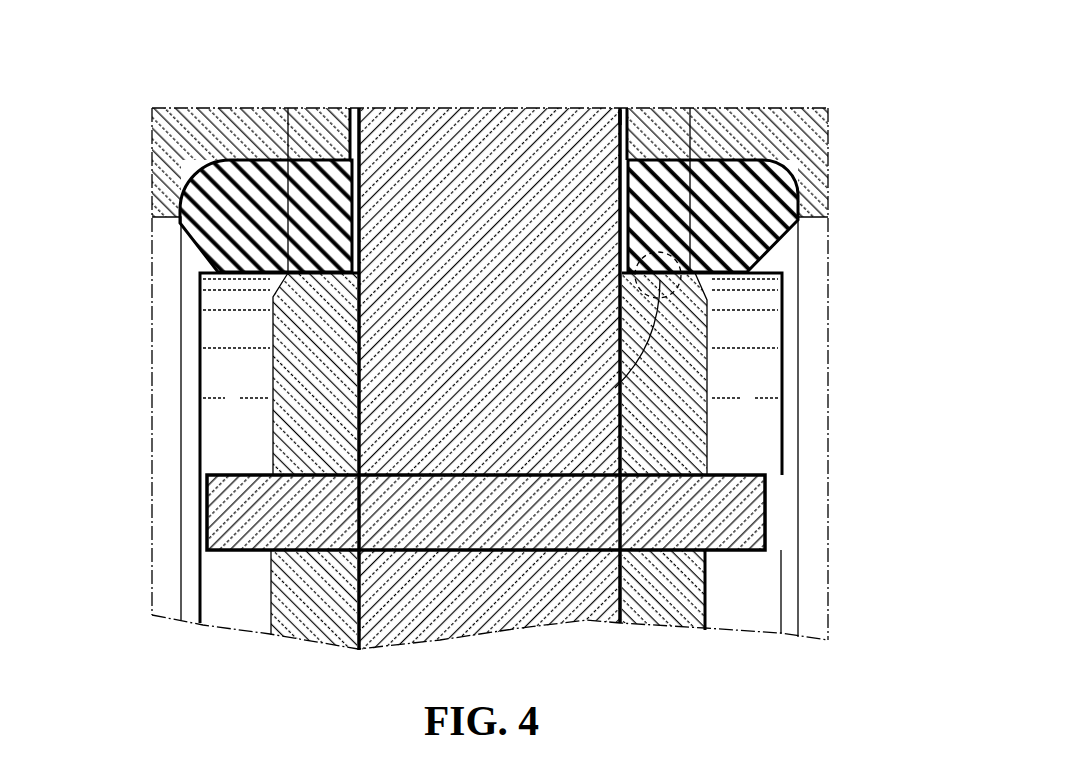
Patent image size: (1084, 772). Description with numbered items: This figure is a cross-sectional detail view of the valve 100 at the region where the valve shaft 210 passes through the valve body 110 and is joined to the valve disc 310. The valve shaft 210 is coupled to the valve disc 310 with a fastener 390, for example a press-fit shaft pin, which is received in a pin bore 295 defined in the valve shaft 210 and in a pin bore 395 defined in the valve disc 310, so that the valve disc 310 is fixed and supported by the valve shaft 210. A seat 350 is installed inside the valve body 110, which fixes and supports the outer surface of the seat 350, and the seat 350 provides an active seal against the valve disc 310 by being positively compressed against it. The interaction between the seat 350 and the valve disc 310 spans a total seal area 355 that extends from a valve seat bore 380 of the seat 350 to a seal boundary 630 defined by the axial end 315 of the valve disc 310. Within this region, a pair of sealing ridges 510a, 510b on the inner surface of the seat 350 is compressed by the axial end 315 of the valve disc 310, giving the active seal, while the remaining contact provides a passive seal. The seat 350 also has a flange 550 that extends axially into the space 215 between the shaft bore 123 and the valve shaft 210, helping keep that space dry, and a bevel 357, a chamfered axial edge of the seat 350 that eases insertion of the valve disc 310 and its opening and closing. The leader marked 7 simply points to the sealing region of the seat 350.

The valve 100 is at (220, 63).
The valve body 110 is at (765, 137).
The valve shaft 210 is at (538, 147).
The flange 550 is at (360, 147).
The space 215 is at (618, 124).
The shaft bore 123 is at (620, 122).
The total seal area 355 is at (358, 108).
The seat 350 is at (782, 243).
The seal boundary 630 is at (262, 248).
The axial end 315 is at (357, 264).
The valve seat bore 380 is at (430, 238).
The valve disc 310 is at (303, 590).
The bevel 357 is at (783, 262).
The fastener 390 is at (732, 530).
The pin bore 295 is at (415, 476).
The pin bore 395 is at (673, 477).
The sealing ridge 510a is at (620, 308).
The sealing ridge 510b is at (615, 388).
The cross-section line 7 is at (655, 283).